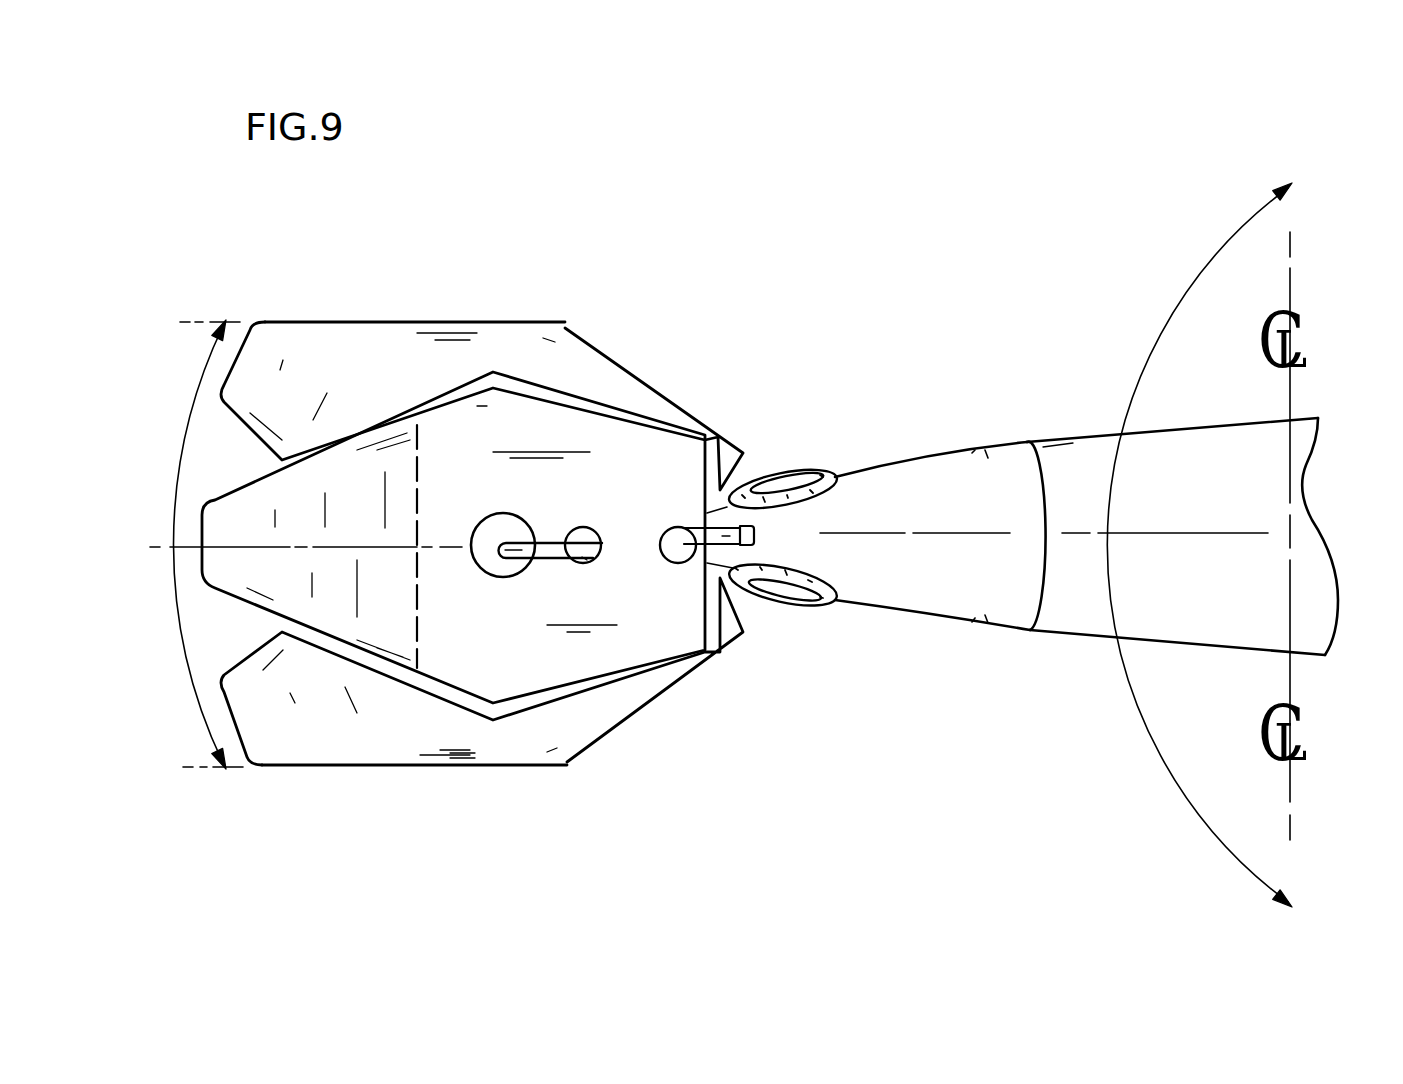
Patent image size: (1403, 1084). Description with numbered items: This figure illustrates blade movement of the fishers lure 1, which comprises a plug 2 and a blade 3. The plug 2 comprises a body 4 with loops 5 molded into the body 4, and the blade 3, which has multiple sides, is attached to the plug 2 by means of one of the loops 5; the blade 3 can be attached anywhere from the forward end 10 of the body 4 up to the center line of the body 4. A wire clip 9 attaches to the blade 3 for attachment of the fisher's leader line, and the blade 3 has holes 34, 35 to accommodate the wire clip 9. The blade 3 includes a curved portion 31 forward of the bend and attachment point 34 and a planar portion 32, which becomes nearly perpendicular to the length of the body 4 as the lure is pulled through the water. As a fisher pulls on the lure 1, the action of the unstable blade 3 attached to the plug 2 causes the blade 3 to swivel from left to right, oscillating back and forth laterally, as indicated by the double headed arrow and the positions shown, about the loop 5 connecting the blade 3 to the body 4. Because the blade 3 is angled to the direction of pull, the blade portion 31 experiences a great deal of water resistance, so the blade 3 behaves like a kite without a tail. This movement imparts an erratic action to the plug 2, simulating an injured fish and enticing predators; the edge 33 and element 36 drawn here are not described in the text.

The fishers lure 1 is at (1086, 504).
The plug 2 is at (1113, 445).
The blade 3 is at (307, 350).
The body 4 is at (1090, 610).
The loop 5 is at (722, 530).
The wire clip 9 is at (550, 552).
The forward end 10 is at (905, 575).
The curved portion 31 is at (327, 480).
The planar portion 32 is at (630, 468).
The fin edge 33 is at (255, 322).
The hole 34 is at (493, 575).
The hole 35 is at (588, 562).
The locking pin 36 is at (685, 553).